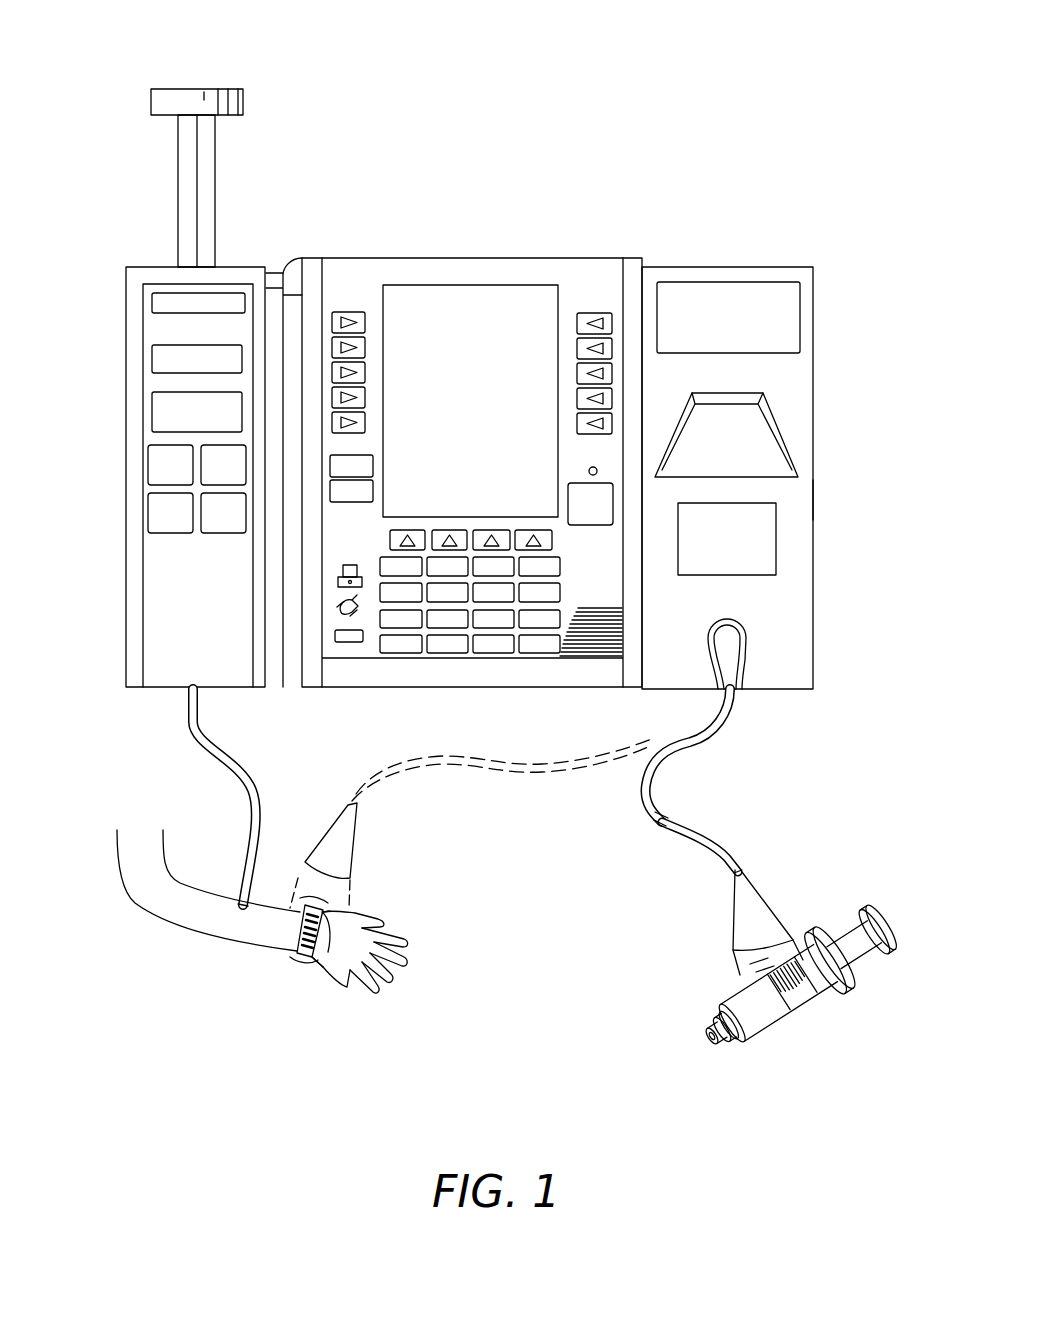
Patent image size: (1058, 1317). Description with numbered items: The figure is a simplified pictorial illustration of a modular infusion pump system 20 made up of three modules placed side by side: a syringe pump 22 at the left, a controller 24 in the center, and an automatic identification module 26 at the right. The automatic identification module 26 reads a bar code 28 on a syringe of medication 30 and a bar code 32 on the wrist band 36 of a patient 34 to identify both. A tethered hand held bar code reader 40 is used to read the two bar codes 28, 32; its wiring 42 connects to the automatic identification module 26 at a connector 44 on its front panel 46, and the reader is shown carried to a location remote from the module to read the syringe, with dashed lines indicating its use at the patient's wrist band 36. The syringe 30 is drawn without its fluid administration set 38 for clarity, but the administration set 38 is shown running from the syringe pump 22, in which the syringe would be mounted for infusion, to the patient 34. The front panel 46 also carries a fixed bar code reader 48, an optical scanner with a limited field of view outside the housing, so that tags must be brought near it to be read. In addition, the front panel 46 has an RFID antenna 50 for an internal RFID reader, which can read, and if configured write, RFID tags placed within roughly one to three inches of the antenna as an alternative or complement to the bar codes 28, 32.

The modular infusion pump system 20 is at (634, 135).
The syringe pump 22 is at (153, 267).
The controller 24 is at (472, 258).
The automatic identification module 26 is at (727, 267).
The bar code 28 is at (805, 975).
The syringe of medication 30 is at (760, 1033).
The bar code 32 is at (300, 930).
The patient 34 is at (203, 925).
The wrist band 36 is at (333, 957).
The fluid administration set 38 is at (223, 755).
The hand held bar code reader 40 is at (763, 902).
The wiring 42 is at (715, 833).
The connector 44 is at (740, 635).
The front panel 46 is at (793, 502).
The fixed bar code reader 48 is at (745, 423).
The RFID antenna 50 is at (753, 552).